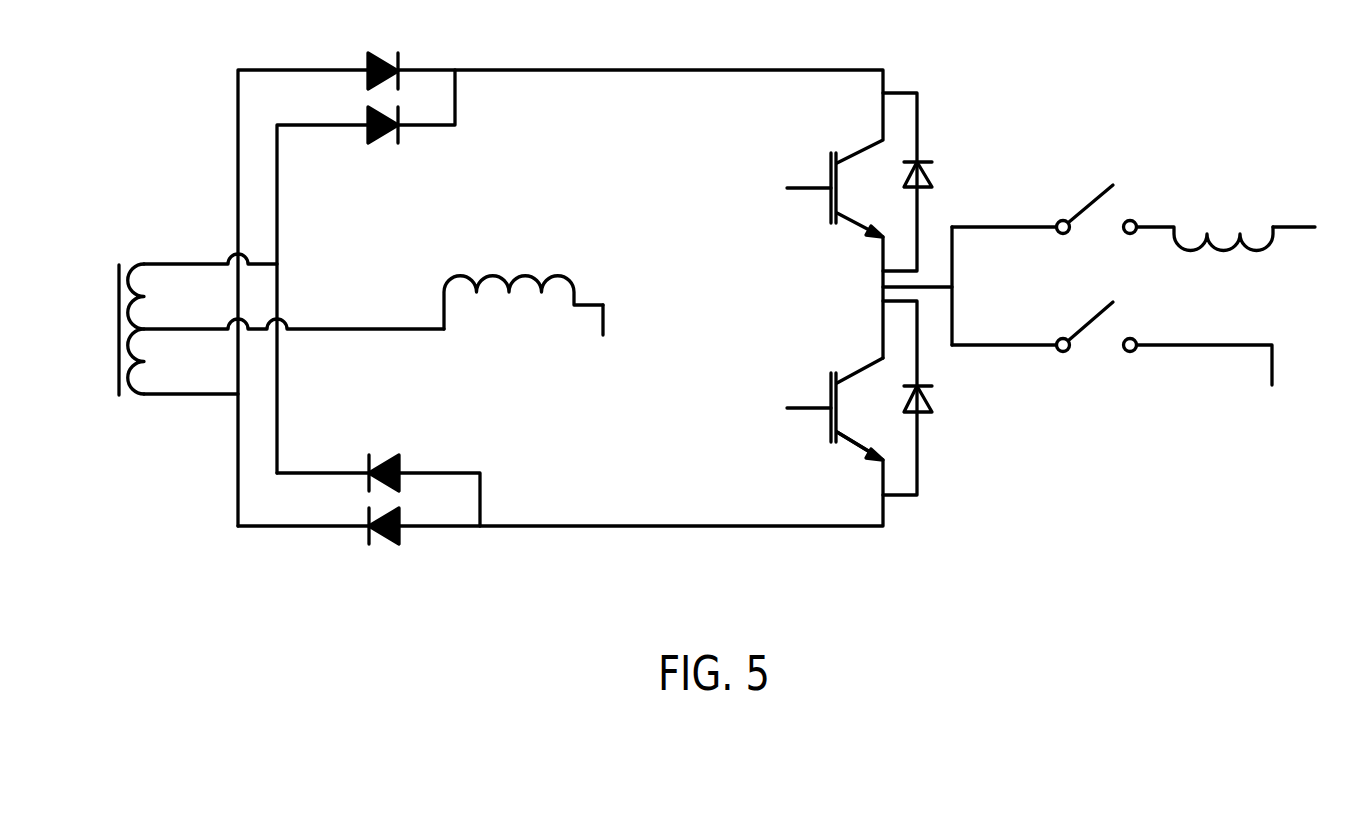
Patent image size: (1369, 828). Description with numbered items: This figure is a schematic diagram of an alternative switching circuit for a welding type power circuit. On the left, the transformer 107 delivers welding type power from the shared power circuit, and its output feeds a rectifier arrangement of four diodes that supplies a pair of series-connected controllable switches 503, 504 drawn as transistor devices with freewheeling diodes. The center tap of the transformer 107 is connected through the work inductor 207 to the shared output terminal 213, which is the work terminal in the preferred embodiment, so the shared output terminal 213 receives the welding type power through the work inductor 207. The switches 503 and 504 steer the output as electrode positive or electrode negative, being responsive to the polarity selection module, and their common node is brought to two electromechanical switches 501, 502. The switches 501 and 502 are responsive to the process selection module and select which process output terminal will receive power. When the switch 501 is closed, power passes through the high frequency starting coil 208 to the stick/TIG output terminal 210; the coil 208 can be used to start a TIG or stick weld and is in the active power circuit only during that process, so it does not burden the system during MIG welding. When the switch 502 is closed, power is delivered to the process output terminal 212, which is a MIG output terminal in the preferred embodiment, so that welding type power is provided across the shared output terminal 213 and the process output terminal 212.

The transformer 107 is at (127, 262).
The work inductor 207 is at (493, 276).
The shared output terminal 213 is at (604, 334).
The switch 503 is at (858, 150).
The switch 504 is at (858, 370).
The switch 501 is at (1090, 203).
The switch 502 is at (1093, 318).
The high frequency starting coil 208 is at (1224, 252).
The stick/TIG output terminal 210 is at (1315, 229).
The process output terminal 212 is at (1216, 381).